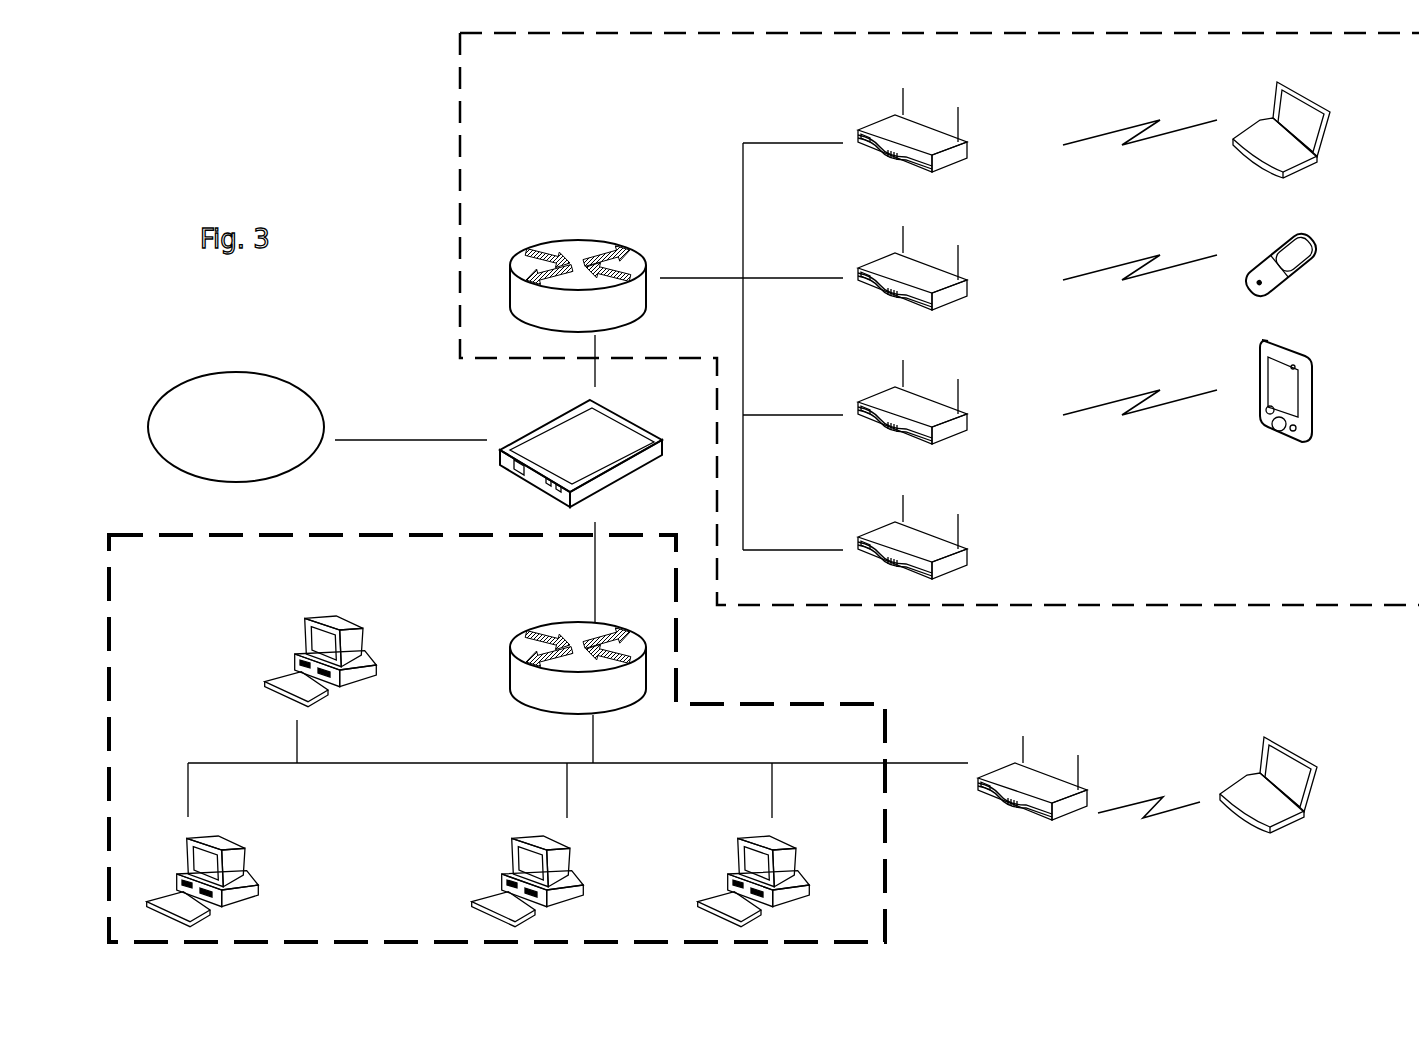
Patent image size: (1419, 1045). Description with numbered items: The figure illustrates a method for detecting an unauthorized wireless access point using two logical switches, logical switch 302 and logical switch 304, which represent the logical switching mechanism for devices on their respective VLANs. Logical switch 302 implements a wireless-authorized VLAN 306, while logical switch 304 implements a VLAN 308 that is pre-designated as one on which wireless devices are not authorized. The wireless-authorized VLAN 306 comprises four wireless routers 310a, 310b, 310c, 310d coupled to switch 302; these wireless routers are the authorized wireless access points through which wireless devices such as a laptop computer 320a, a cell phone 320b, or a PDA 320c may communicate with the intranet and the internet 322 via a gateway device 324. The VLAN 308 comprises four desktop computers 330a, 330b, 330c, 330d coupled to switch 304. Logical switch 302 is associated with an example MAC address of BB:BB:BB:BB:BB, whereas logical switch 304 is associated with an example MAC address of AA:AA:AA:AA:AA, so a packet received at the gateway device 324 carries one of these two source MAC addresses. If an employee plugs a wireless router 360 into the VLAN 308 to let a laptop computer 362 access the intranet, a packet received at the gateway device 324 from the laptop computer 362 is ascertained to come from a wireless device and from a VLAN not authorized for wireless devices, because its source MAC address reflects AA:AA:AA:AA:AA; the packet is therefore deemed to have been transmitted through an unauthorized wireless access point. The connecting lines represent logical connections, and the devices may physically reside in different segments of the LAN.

The logical switch 302 is at (638, 250).
The logical switch 304 is at (508, 670).
The wireless-authorized VLAN 306 is at (458, 142).
The VLAN 308 is at (885, 830).
The wireless router 310a is at (970, 147).
The wireless router 310b is at (970, 285).
The wireless router 310c is at (970, 419).
The wireless router 310d is at (970, 554).
The laptop computer 320a is at (1322, 133).
The cell phone 320b is at (1318, 272).
The PDA 320c is at (1313, 395).
The internet 322 is at (233, 372).
The gateway device 324 is at (630, 418).
The desktop computer 330a is at (273, 677).
The desktop computer 330b is at (850, 857).
The desktop computer 330c is at (262, 882).
The desktop computer 330d is at (588, 885).
The wireless router 360 is at (1040, 818).
The laptop computer 362 is at (1237, 783).